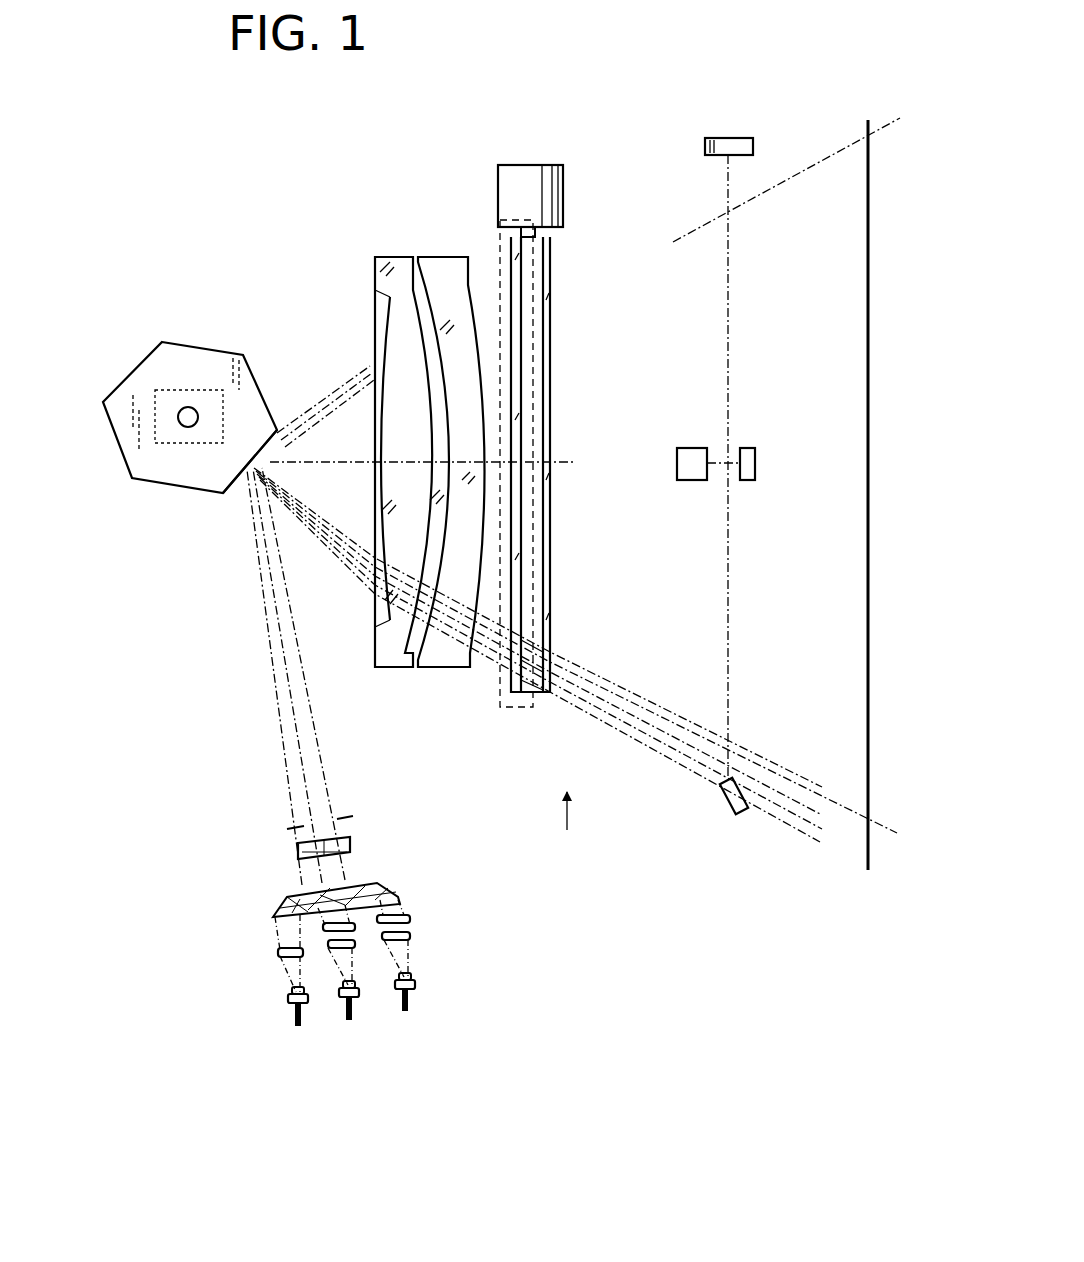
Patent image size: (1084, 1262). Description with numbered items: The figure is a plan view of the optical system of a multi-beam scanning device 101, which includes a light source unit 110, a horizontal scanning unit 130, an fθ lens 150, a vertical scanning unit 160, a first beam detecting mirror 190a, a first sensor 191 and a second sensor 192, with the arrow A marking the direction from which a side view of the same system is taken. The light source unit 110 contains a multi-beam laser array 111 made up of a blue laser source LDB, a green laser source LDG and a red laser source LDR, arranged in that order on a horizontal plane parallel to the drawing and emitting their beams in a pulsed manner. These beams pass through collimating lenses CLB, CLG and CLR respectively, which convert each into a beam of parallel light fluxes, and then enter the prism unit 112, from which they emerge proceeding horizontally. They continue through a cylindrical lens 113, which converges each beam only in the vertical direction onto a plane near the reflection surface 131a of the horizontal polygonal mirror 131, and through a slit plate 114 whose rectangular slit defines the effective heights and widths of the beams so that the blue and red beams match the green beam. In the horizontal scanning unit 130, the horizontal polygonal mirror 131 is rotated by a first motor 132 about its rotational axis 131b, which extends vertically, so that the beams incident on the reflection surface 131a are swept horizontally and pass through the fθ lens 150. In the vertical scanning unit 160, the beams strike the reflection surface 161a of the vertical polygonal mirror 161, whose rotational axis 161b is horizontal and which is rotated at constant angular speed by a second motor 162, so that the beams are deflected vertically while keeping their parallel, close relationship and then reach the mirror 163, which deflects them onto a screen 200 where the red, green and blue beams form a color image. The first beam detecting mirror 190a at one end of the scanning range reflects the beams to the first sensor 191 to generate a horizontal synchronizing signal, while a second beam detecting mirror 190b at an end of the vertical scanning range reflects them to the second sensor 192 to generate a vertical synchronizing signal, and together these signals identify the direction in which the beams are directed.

The multi-beam scanning device 101 is at (156, 688).
The light source unit 110 is at (256, 898).
The multi-beam laser array 111 is at (435, 1064).
The prism unit 112 is at (442, 858).
The cylindrical lens 113 is at (354, 845).
The slit plate 114 is at (292, 826).
The horizontal scanning unit 130 is at (128, 352).
The horizontal polygonal mirror 131 is at (163, 343).
The reflection surface 131a is at (240, 486).
The rotational axis 131b is at (199, 417).
The first motor 132 is at (211, 385).
The fθ lens 150 is at (468, 672).
The vertical scanning unit 160 is at (634, 250).
The vertical polygonal mirror 161 is at (557, 337).
The reflection surface 161a is at (506, 712).
The rotational axis 161b is at (520, 232).
The second motor 162 is at (557, 165).
The mirror 163 is at (543, 605).
The first beam detecting mirror 190a is at (727, 802).
The second beam detecting mirror 190b is at (756, 462).
The first sensor 191 is at (745, 137).
The second sensor 192 is at (690, 447).
The screen 200 is at (869, 520).
The arrow A is at (564, 832).
The collimating lens CLB is at (276, 953).
The collimating lens CLG is at (325, 946).
The collimating lens CLR is at (412, 937).
The blue laser source LDB is at (290, 1000).
The green laser source LDG is at (337, 1005).
The red laser source LDR is at (393, 990).